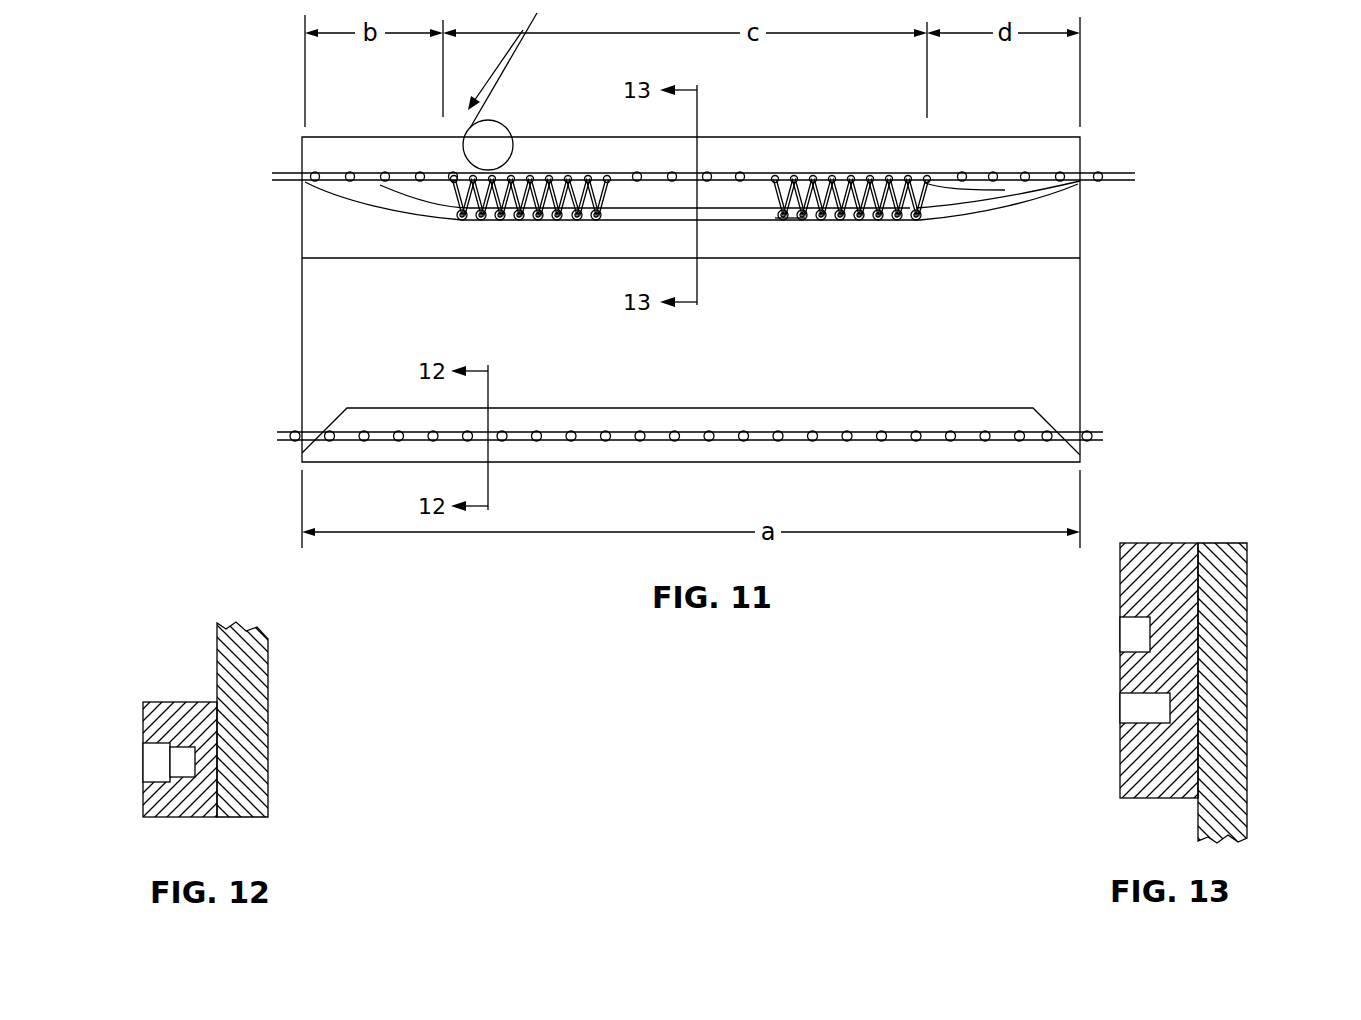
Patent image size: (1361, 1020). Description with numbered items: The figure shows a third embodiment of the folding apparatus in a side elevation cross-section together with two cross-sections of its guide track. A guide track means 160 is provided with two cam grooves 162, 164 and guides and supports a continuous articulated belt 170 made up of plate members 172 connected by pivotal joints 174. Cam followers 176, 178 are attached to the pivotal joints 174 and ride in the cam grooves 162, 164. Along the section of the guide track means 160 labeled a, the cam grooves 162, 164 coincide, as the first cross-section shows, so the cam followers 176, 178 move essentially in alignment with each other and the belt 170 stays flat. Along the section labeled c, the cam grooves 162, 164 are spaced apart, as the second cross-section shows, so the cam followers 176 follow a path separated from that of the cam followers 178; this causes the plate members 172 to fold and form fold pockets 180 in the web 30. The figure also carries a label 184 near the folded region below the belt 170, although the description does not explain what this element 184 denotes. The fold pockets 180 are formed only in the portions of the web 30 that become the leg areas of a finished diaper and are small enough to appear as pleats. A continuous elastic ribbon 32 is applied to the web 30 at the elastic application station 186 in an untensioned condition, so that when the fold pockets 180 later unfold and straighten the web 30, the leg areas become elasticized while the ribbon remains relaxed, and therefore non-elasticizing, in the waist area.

In FIG. 11, the web 30 is at (282, 176).
In FIG. 11, the continuous elastic ribbon 32 is at (498, 85).
In FIG. 11, the guide track means 160 is at (988, 130).
In FIG. 12, the guide track means 160 is at (224, 707).
In FIG. 13, the guide track means 160 is at (1207, 589).
In FIG. 11, the cam groove 162 is at (822, 174).
In FIG. 12, the cam groove 162 is at (158, 764).
In FIG. 13, the cam groove 162 is at (1133, 637).
In FIG. 11, the cam groove 164 is at (680, 222).
In FIG. 12, the cam groove 164 is at (183, 764).
In FIG. 13, the cam groove 164 is at (1133, 705).
In FIG. 11, the continuous articulated belt 170 is at (1083, 182).
In FIG. 11, the plate member 172 is at (600, 218).
In FIG. 11, the pivotal joint 174 is at (913, 174).
In FIG. 11, the cam follower 176 is at (830, 176).
In FIG. 11, the cam follower 178 is at (805, 218).
In FIG. 11, the fold pocket 180 is at (463, 178).
In FIG. 11, the lower strip 184 is at (443, 250).
In FIG. 11, the elastic application station 186 is at (488, 118).